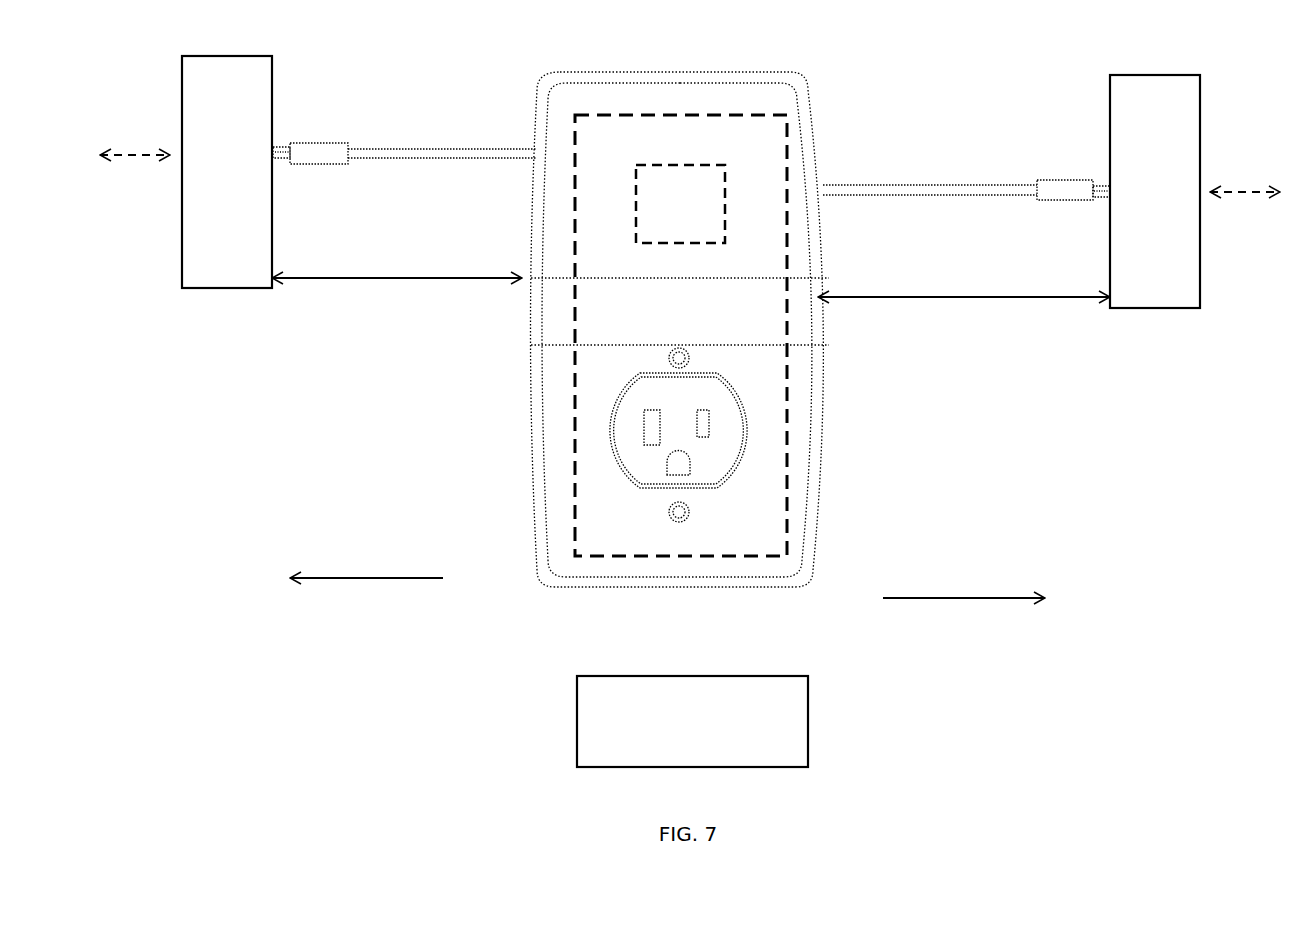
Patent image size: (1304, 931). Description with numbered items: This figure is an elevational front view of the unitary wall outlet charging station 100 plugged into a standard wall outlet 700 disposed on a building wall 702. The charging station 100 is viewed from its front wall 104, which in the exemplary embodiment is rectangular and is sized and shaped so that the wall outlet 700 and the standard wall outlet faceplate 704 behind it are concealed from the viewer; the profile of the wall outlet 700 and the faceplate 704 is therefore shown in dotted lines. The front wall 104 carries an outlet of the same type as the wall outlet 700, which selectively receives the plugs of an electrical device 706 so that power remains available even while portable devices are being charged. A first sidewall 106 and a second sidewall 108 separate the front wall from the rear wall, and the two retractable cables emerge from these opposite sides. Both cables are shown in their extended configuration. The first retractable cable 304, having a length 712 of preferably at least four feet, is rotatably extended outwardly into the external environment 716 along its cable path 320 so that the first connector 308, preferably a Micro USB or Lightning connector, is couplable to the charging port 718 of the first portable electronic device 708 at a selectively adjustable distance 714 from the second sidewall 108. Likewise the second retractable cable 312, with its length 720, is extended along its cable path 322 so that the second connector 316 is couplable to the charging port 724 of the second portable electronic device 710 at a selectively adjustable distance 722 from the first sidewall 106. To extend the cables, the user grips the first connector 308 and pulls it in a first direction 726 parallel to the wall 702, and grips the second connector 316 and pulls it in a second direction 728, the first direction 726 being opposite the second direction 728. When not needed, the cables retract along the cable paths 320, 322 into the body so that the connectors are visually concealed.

The unitary wall outlet charging station 100 is at (852, 122).
The front wall 104 is at (595, 95).
The first sidewall 106 is at (827, 427).
The second sidewall 108 is at (525, 430).
The first retractable cable 304 is at (437, 160).
The first connector 308 is at (282, 158).
The second retractable cable 312 is at (943, 197).
The second connector 316 is at (1105, 200).
The cable path 320 is at (134, 150).
The cable path 322 is at (1243, 190).
The wall outlet 700 is at (710, 167).
The building wall 702 is at (485, 38).
The standard wall outlet faceplate 704 is at (688, 114).
The electrical device 706 is at (680, 482).
The first portable electronic device 708 is at (243, 224).
The second portable electronic device 710 is at (1172, 259).
The length of first retractable cable 712 is at (413, 147).
The selectively adjustable distance 714 is at (403, 280).
The external environment 716 is at (522, 132).
The charging port 718 is at (283, 137).
The length of second retractable cable 720 is at (975, 184).
The selectively adjustable distance 722 is at (953, 298).
The charging port 724 is at (1107, 178).
The first direction 726 is at (343, 578).
The second direction 728 is at (950, 598).